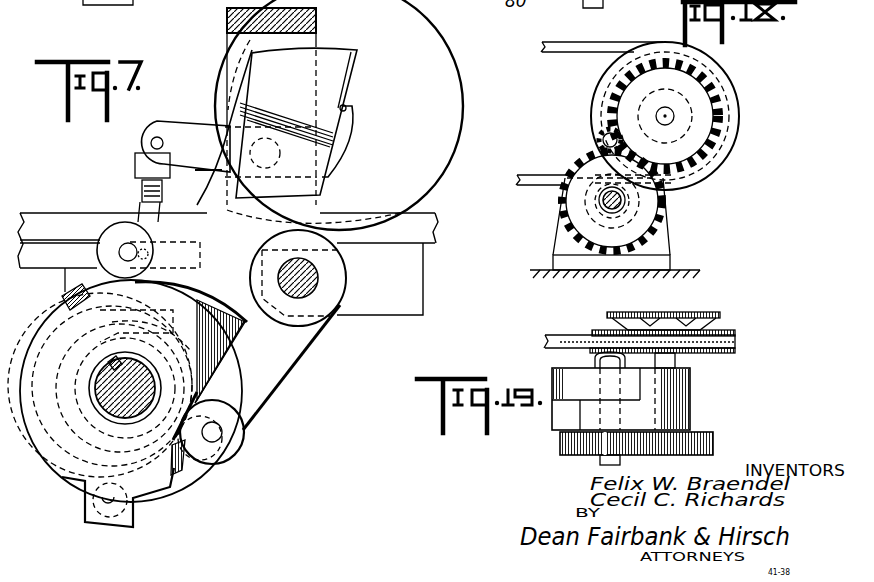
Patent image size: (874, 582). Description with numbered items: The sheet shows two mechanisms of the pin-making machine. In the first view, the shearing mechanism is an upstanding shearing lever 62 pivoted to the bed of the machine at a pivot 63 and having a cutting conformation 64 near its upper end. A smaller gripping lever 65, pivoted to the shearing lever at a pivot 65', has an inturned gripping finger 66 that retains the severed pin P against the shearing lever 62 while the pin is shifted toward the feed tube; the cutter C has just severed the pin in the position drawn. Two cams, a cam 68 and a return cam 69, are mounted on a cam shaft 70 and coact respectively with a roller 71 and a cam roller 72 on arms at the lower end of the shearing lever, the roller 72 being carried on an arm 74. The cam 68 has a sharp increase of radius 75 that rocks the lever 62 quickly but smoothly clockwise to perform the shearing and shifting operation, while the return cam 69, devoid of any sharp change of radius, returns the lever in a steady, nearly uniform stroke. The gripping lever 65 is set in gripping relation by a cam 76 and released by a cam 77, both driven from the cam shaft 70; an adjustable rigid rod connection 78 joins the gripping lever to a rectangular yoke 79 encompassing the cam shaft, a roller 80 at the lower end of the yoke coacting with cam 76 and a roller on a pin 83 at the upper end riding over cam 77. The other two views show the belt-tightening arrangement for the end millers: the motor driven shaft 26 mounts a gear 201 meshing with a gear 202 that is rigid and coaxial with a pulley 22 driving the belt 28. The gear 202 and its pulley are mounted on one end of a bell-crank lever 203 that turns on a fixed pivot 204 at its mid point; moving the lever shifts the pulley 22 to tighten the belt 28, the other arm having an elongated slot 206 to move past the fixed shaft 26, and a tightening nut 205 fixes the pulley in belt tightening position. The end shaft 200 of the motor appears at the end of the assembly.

In FIG. 7, the shearing lever 62 is at (300, 198).
In FIG. 7, the pivot 63 is at (312, 278).
In FIG. 7, the cutting conformation 64 is at (362, 62).
In FIG. 7, the gripping lever 65 is at (182, 137).
In FIG. 7, the pivot 65' is at (286, 114).
In FIG. 7, the gripping finger 66 is at (357, 126).
In FIG. 7, the cam 68 is at (200, 335).
In FIG. 7, the return cam 69 is at (35, 458).
In FIG. 7, the cam shaft 70 is at (138, 392).
In FIG. 7, the roller 71 is at (106, 234).
In FIG. 7, the cam roller 72 is at (240, 450).
In FIG. 7, the arm 74 is at (282, 362).
In FIG. 7, the sharp increase of radius 75 is at (225, 287).
In FIG. 7, the cam 76 is at (205, 468).
In FIG. 7, the cam 77 is at (60, 300).
In FIG. 7, the rod connection 78 is at (138, 192).
In FIG. 7, the yoke 79 is at (176, 488).
In FIG. 7, the roller 80 is at (115, 6).
In FIG. 7, the pin 83 is at (203, 258).
In FIG. 7, the severed pin P is at (345, 105).
In FIG. 7, the cutter C is at (355, 165).
In FIG. 18, the belt 28 is at (544, 48).
In FIG. 19, the belt 28 is at (563, 335).
In FIG. 18, the pulley 22 is at (708, 66).
In FIG. 19, the pulley 22 is at (740, 335).
In FIG. 18, the end shaft 200 is at (675, 117).
In FIG. 19, the end shaft 200 is at (677, 354).
In FIG. 18, the gear 201 is at (650, 243).
In FIG. 19, the gear 201 is at (560, 446).
In FIG. 18, the gear 202 is at (690, 150).
In FIG. 19, the gear 202 is at (715, 446).
In FIG. 18, the bell-crank lever 203 is at (613, 99).
In FIG. 19, the bell-crank lever 203 is at (583, 415).
In FIG. 18, the fixed pivot 204 is at (598, 138).
In FIG. 18, the tightening nut 205 is at (594, 160).
In FIG. 19, the tightening nut 205 is at (592, 361).
In FIG. 18, the elongated slot 206 is at (563, 213).
In FIG. 18, the motor driven shaft 26 is at (606, 206).